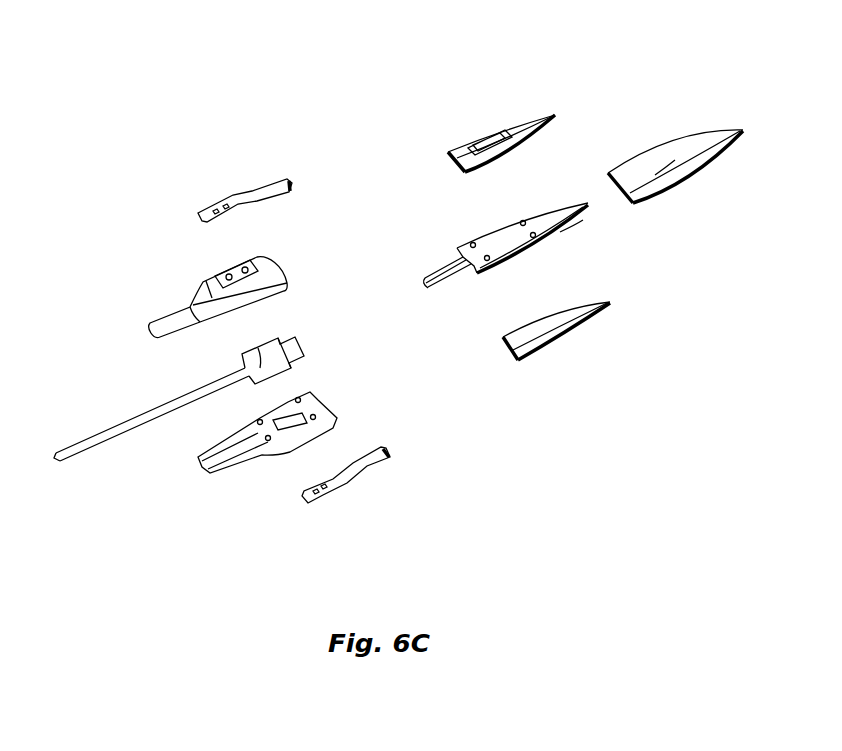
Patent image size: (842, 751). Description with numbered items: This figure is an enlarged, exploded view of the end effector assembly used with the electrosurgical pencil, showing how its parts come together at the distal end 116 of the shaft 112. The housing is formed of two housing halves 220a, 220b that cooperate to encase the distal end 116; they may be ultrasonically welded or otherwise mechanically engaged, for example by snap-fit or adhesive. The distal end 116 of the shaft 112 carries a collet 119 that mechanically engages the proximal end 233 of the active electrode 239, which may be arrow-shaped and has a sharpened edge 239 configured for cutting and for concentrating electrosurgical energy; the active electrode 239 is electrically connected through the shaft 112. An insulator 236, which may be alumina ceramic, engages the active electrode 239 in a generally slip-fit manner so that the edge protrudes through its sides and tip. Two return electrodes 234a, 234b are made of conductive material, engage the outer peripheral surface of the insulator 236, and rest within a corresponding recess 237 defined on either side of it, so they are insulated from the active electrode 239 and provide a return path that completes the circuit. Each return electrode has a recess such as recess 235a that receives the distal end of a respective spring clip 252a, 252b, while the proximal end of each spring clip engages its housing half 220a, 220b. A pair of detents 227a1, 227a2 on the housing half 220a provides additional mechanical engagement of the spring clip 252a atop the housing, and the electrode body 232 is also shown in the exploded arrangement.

The shaft 112 is at (127, 434).
The distal end of shaft 116 is at (256, 348).
The collet 119 is at (291, 330).
The housing half 220a is at (179, 200).
The housing half 220b is at (238, 458).
The detent 227a1 is at (226, 273).
The detent 227a2 is at (246, 266).
The spring clip 252a is at (287, 181).
The spring clip 252b is at (380, 461).
The blade body 232 is at (555, 241).
The proximal end of active electrode 233 is at (448, 278).
The return electrode 234a is at (516, 94).
The return electrode 234b is at (555, 328).
The recess 235a is at (481, 140).
The insulator 236 is at (675, 172).
The recess 237 is at (664, 166).
The active electrode 239 is at (560, 232).